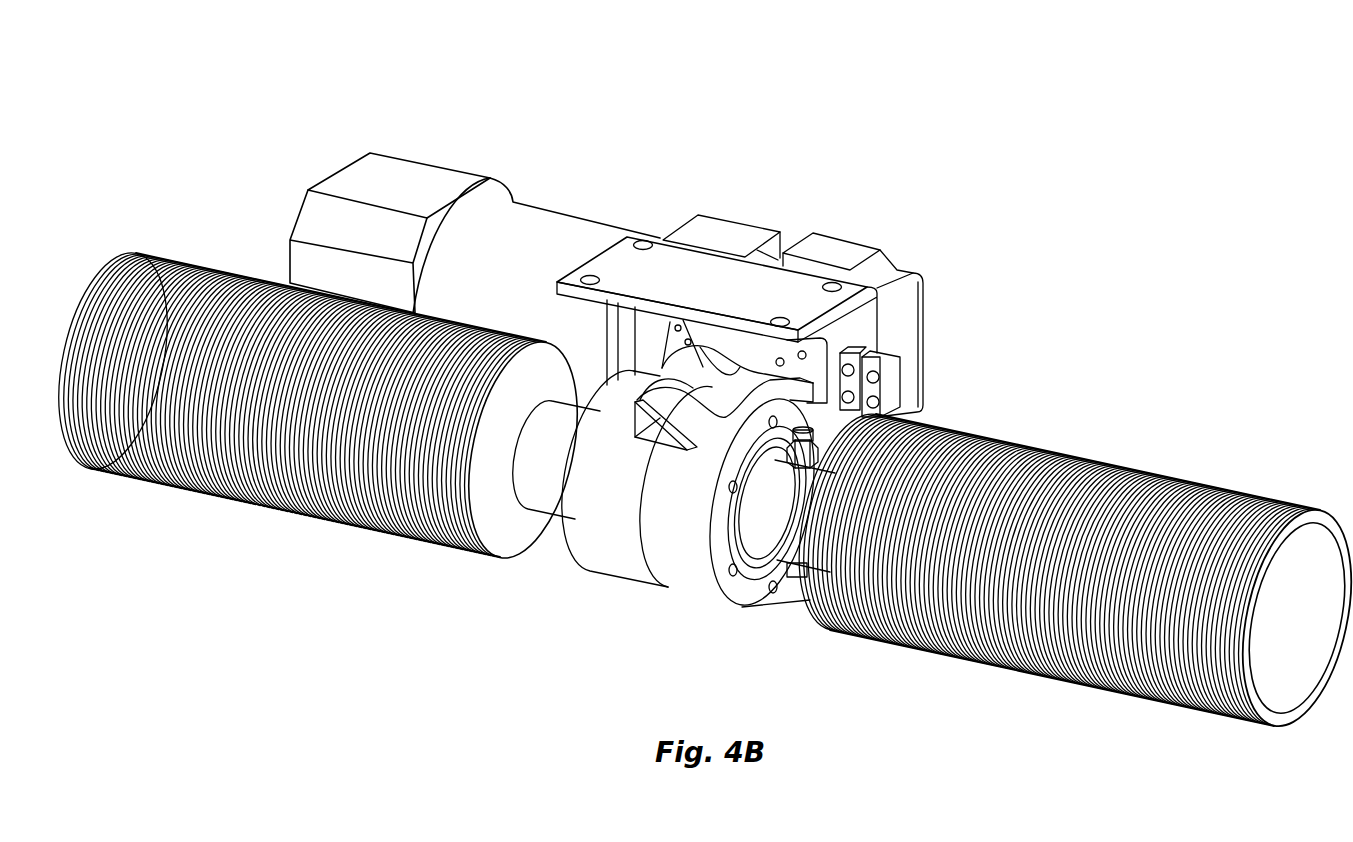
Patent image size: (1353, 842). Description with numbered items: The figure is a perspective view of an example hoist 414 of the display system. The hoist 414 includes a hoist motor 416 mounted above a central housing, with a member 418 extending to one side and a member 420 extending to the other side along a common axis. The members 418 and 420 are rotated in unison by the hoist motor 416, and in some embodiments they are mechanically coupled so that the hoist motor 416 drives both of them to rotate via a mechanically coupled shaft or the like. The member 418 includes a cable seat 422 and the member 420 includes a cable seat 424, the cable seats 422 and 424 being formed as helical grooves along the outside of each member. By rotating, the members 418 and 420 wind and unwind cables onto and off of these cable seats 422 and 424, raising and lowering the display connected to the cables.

The hoist 414 is at (1086, 124).
The hoist motor 416 is at (418, 173).
The member 418 is at (1099, 695).
The member 420 is at (331, 532).
The cable seat 422 is at (1005, 672).
The cable seat 424 is at (232, 503).